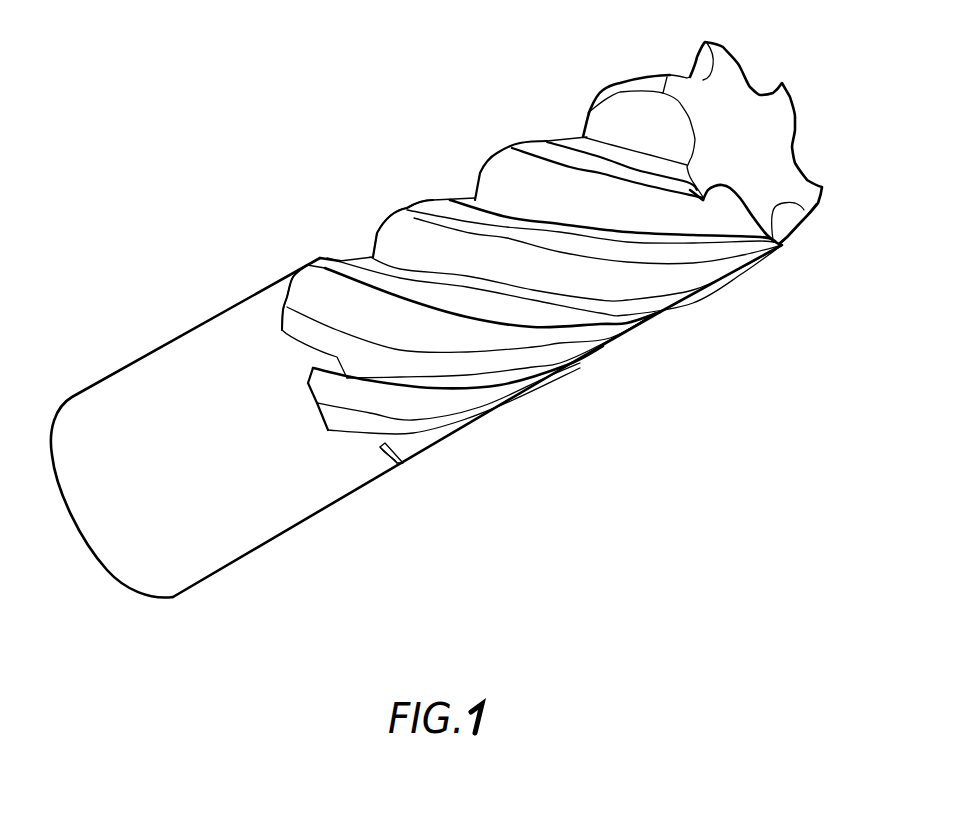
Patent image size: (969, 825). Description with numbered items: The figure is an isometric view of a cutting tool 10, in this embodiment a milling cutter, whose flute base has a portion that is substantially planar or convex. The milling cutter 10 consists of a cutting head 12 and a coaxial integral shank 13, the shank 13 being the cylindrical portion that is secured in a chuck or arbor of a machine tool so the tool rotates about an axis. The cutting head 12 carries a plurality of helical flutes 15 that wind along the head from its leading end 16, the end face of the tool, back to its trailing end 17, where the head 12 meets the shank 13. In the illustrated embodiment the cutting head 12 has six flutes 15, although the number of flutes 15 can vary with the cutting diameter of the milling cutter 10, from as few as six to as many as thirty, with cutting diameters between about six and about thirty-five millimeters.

The cutting tool 10 is at (200, 70).
The cutting head 12 is at (515, 140).
The shank 13 is at (197, 357).
The helical flutes 15 is at (504, 186).
The leading end 16 is at (765, 157).
The trailing end 17 is at (289, 283).